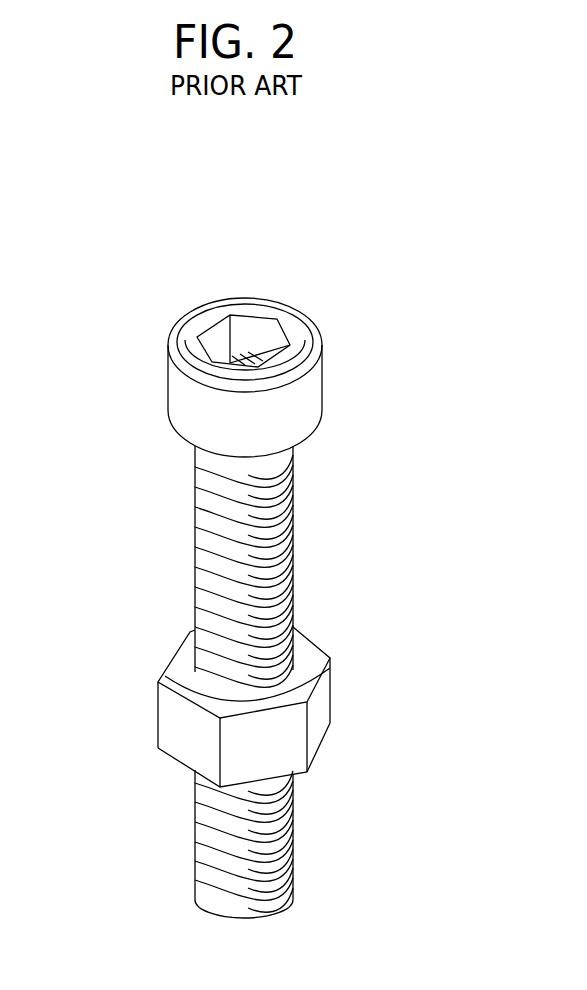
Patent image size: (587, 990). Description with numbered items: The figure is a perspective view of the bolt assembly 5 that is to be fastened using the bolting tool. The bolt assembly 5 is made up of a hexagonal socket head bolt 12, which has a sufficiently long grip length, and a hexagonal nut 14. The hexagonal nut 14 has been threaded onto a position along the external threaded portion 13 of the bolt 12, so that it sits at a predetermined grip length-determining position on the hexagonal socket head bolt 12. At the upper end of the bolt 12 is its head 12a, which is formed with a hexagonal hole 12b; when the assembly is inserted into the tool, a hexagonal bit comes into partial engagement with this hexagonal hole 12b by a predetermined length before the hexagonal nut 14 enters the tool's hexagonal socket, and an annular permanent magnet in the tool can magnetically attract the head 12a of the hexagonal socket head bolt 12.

The bolt assembly 5 is at (342, 232).
The hexagonal socket head bolt 12 is at (150, 422).
The head 12a is at (306, 416).
The hexagonal hole 12b is at (222, 302).
The external threaded portion 13 is at (195, 811).
The hexagonal nut 14 is at (322, 702).